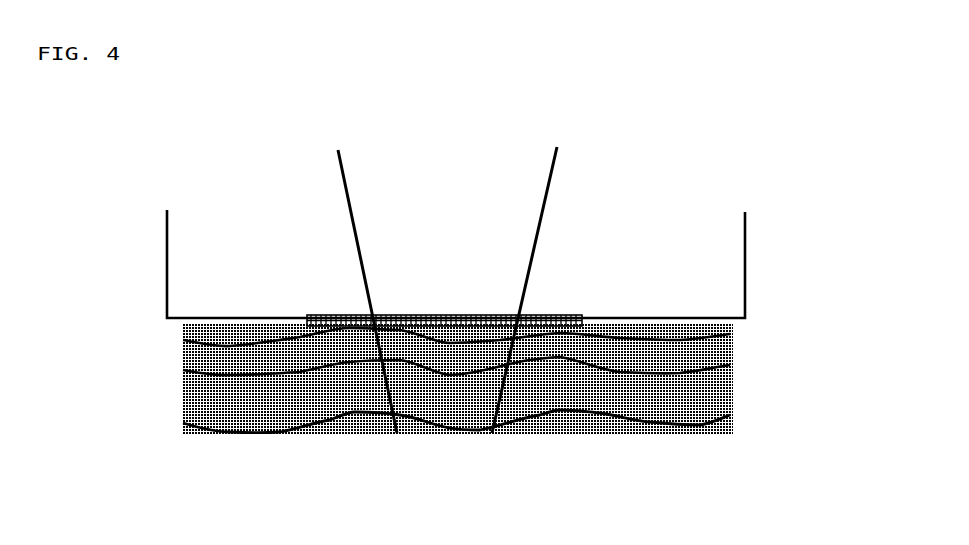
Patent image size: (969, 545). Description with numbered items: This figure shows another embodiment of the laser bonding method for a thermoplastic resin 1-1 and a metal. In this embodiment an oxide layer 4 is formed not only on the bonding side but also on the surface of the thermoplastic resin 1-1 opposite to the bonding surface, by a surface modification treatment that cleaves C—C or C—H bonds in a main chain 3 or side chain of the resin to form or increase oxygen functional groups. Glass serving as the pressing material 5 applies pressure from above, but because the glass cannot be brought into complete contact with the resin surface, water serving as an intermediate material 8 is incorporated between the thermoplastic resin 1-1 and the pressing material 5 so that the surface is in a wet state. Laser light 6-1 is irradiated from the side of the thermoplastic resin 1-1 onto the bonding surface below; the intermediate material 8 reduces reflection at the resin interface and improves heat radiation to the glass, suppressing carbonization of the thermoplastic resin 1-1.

The pressing material 5 is at (165, 213).
The laser light 6-1 is at (560, 156).
The intermediate material 8 is at (583, 318).
The oxide layer 4 is at (183, 344).
The thermoplastic resin 1-1 is at (183, 403).
The main chain 3 is at (256, 433).